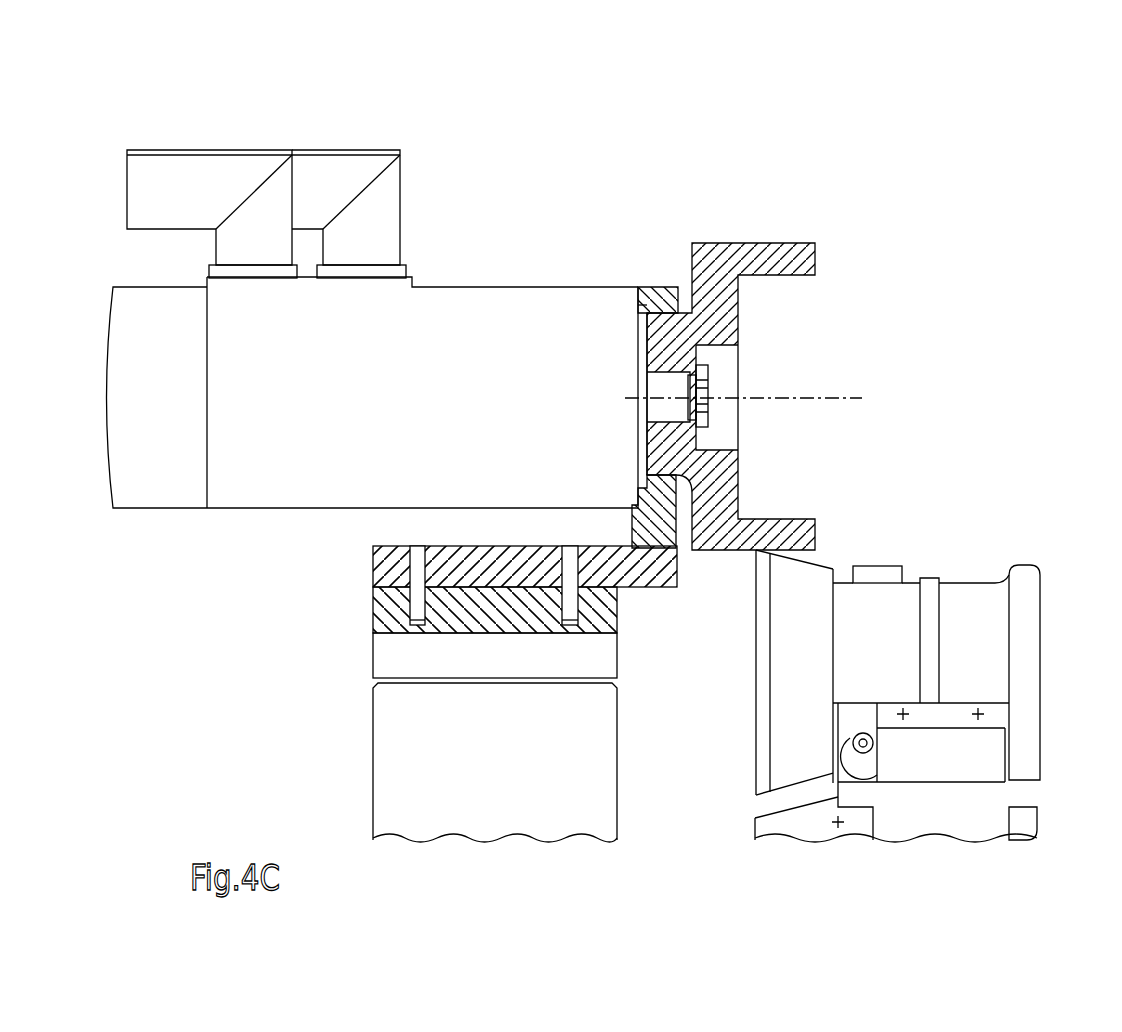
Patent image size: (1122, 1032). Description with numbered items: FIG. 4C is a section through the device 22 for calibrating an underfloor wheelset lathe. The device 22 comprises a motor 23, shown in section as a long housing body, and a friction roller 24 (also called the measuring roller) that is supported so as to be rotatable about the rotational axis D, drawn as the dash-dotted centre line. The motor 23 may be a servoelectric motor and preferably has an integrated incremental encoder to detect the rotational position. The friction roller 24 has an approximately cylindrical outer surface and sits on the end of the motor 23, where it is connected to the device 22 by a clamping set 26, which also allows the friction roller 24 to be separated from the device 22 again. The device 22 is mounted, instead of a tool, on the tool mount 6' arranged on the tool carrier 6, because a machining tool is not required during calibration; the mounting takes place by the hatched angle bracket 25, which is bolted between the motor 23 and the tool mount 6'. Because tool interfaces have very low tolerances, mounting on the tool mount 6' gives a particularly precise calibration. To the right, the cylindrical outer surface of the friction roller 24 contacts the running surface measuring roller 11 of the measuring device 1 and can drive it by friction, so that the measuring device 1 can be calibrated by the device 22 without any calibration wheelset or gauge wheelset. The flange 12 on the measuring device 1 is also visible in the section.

The measuring device 1 is at (969, 512).
The tool carrier 6 is at (463, 762).
The tool mount 6' is at (462, 655).
The running surface measuring roller 11 is at (788, 621).
The flange 12 is at (1032, 618).
The device 22 is at (445, 122).
The motor 23 is at (440, 408).
The friction roller 24 is at (743, 253).
The angle bracket 25 is at (650, 520).
The clamping set 26 is at (700, 392).
The rotational axis D is at (855, 395).